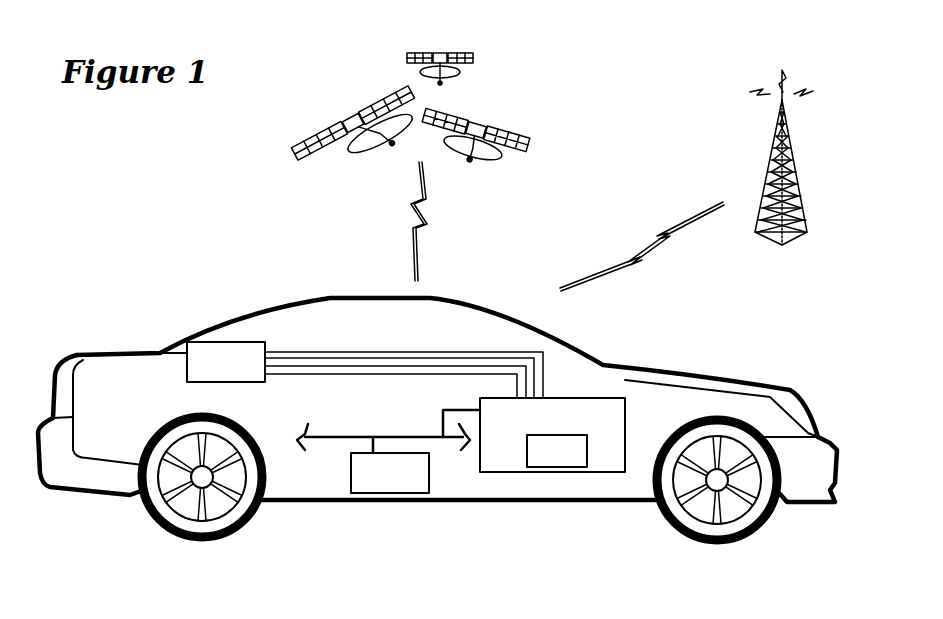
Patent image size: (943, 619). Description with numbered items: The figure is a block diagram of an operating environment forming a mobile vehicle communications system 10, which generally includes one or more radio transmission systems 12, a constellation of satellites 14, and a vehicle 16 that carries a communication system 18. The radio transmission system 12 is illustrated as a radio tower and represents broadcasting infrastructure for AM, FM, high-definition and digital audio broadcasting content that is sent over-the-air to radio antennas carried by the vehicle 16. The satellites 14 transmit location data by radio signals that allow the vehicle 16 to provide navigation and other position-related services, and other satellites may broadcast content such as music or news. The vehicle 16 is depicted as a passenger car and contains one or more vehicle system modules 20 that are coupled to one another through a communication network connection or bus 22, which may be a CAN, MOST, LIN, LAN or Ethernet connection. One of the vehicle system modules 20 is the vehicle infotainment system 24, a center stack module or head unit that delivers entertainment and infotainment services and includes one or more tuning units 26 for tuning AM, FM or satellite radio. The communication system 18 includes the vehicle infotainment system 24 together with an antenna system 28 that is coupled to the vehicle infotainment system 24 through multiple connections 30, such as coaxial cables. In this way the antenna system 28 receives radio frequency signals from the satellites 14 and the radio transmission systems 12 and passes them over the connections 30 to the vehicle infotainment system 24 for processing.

The mobile vehicle communications system 10 is at (594, 101).
The radio transmission system 12 is at (768, 174).
The satellites 14 is at (334, 94).
The vehicle 16 is at (611, 354).
The communication system 18 is at (440, 322).
The vehicle system module 20 is at (647, 411).
The communication network connection or bus 22 is at (355, 428).
The vehicle infotainment system 24 is at (552, 435).
The tuning unit 26 is at (557, 451).
The antenna system 28 is at (226, 362).
The connections 30 is at (322, 343).